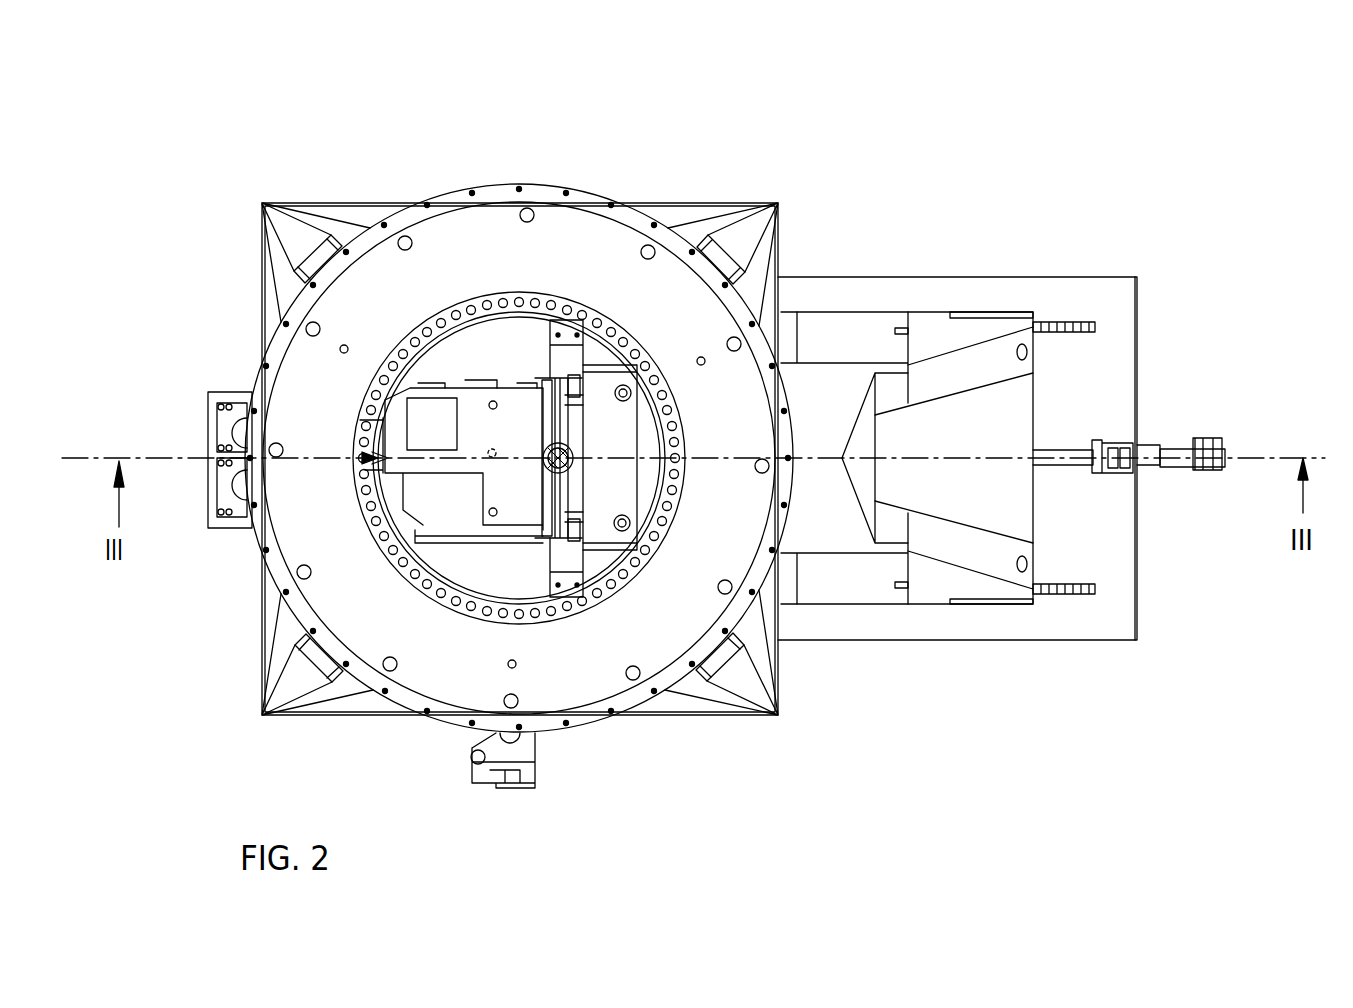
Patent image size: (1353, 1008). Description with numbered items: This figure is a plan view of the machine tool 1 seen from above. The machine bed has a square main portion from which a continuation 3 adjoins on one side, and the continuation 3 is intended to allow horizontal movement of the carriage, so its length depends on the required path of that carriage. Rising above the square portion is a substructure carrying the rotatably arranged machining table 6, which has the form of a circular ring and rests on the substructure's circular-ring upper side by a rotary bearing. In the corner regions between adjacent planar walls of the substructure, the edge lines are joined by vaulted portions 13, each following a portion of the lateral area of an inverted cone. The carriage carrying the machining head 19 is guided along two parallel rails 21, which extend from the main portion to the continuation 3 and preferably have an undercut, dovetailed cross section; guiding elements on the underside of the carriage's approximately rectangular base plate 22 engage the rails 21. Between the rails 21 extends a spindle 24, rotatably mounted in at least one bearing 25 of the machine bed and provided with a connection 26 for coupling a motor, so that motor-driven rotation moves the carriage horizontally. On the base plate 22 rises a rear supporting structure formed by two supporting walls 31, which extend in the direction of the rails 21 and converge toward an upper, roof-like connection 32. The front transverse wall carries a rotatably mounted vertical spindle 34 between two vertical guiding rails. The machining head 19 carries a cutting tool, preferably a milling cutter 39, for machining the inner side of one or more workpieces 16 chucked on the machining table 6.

The machine tool 1 is at (266, 172).
The continuation 3 is at (1059, 302).
The machining table 6 is at (590, 245).
The vaulted portion 13 is at (712, 235).
The workpiece 16 is at (557, 298).
The machining head 19 is at (478, 404).
The rail 21 is at (1078, 333).
The base plate 22 is at (1012, 405).
The spindle 24 is at (1055, 468).
The bearing 25 is at (1098, 472).
The connection 26 is at (1228, 460).
The supporting wall 31 is at (850, 340).
The roof-like connection 32 is at (631, 442).
The spindle 34 is at (575, 470).
The milling cutter 39 is at (375, 448).